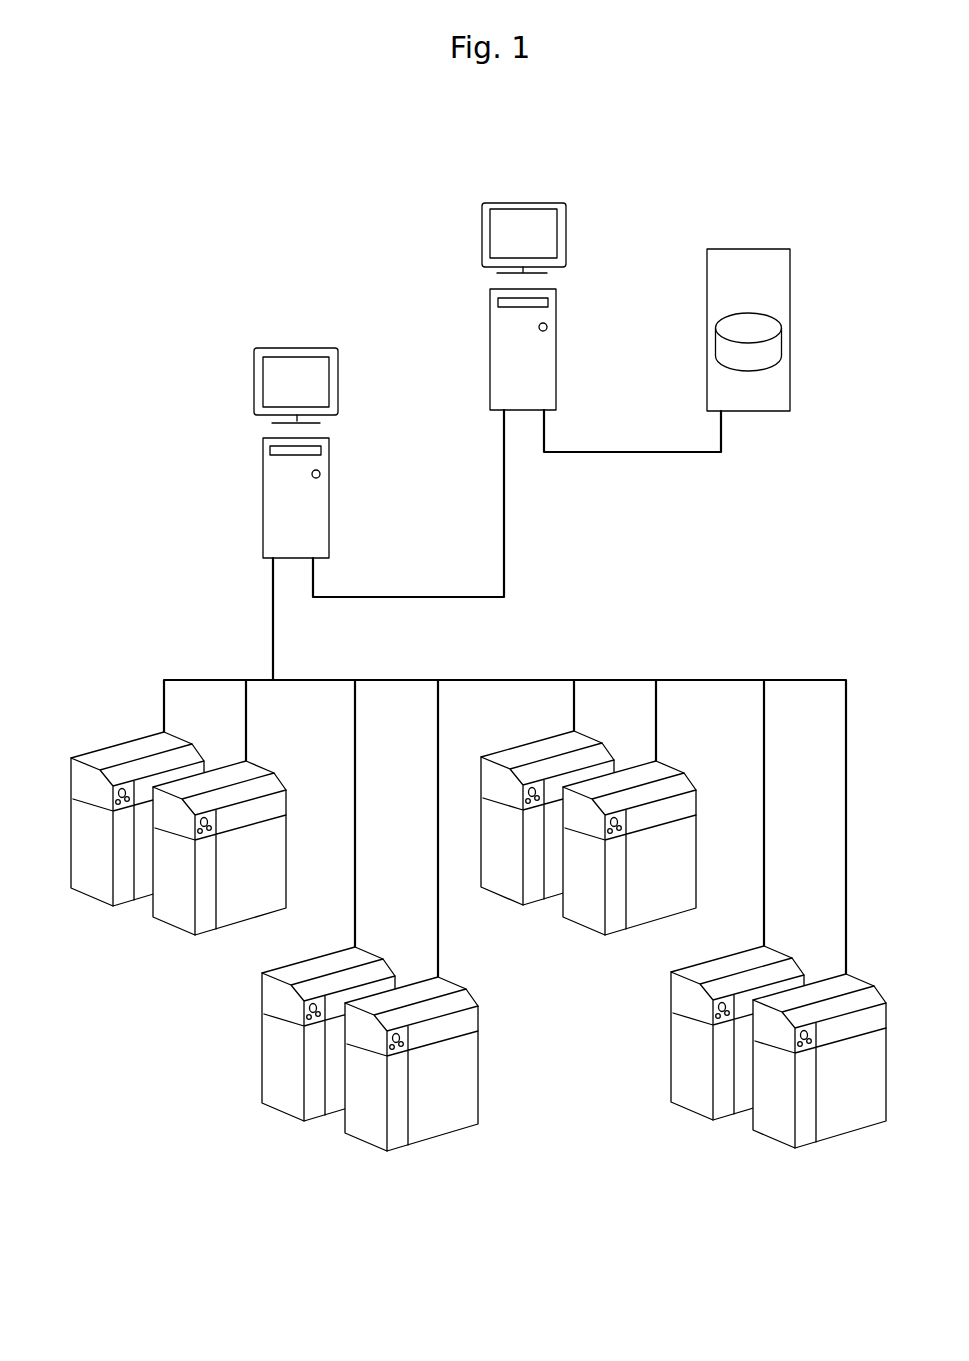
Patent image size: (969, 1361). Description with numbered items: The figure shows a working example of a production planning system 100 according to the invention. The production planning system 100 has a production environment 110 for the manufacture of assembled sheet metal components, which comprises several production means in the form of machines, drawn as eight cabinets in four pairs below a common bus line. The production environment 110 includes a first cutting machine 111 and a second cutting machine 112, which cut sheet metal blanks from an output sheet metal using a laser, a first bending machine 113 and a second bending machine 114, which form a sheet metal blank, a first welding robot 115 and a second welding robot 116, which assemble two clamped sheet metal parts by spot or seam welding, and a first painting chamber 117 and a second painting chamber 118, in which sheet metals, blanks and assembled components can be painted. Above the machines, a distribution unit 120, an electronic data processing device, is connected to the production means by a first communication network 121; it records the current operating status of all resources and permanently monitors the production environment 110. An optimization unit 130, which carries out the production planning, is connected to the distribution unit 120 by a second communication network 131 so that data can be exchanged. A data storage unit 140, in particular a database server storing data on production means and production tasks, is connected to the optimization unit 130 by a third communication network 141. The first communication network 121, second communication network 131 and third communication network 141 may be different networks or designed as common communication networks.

The production planning system 100 is at (165, 305).
The production environment 110 is at (177, 1188).
The first cutting machine 111 is at (121, 905).
The second cutting machine 112 is at (205, 933).
The first bending machine 113 is at (317, 1119).
The second bending machine 114 is at (398, 1148).
The first welding robot 115 is at (532, 904).
The second welding robot 116 is at (613, 933).
The first painting chamber 117 is at (723, 1120).
The second painting chamber 118 is at (807, 1147).
The distribution unit 120 is at (263, 493).
The first communication network 121 is at (225, 679).
The optimization unit 130 is at (490, 343).
The second communication network 131 is at (436, 597).
The data storage unit 140 is at (708, 318).
The third communication network 141 is at (652, 452).